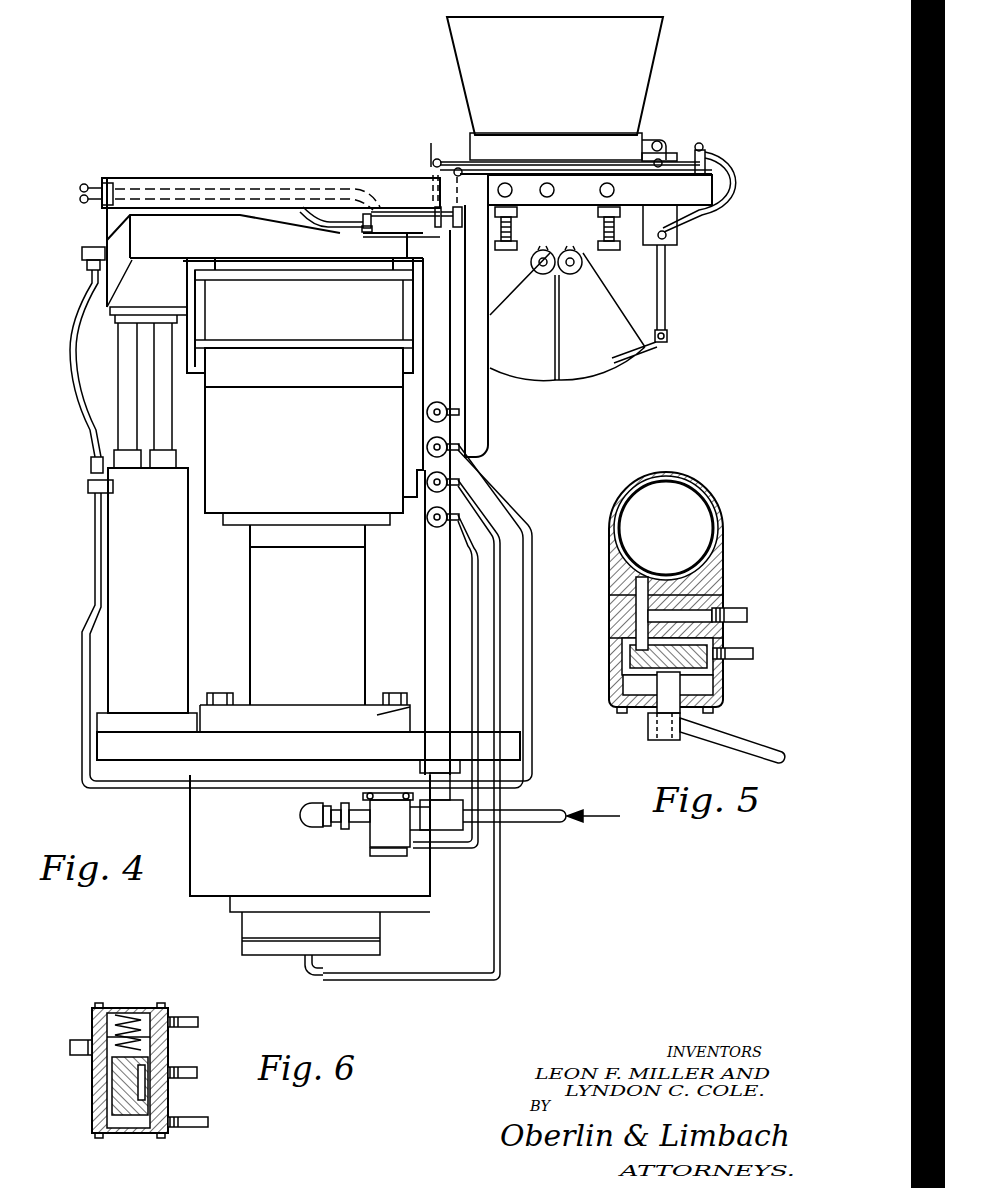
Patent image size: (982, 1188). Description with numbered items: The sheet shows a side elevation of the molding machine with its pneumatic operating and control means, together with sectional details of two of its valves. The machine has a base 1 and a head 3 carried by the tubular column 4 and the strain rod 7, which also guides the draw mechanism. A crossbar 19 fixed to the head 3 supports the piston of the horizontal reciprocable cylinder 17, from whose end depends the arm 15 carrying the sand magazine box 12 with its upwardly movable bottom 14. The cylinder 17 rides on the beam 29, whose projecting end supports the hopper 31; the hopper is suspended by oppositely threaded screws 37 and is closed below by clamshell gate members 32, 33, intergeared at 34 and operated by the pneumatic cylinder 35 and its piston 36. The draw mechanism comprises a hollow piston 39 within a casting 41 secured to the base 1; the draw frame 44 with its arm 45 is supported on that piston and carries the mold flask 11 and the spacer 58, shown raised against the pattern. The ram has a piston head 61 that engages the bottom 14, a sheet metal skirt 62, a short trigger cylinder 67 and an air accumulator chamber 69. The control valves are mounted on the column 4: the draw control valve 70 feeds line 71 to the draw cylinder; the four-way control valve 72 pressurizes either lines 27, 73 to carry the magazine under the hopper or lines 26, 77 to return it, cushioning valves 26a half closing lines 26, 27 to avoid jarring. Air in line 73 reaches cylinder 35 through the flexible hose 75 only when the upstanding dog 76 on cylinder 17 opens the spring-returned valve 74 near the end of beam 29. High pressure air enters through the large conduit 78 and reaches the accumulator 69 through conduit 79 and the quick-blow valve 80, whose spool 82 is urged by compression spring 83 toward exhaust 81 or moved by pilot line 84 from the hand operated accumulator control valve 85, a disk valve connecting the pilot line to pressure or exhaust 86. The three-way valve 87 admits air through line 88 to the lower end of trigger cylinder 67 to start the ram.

In FIG. 4, the base 1 is at (105, 745).
In FIG. 4, the head 3 is at (105, 223).
In FIG. 4, the tubular column 4 is at (437, 637).
In FIG. 5, the tubular column 4 is at (708, 500).
In FIG. 4, the strain rod 7 is at (145, 385).
In FIG. 4, the mold flask 11 is at (305, 377).
In FIG. 4, the sand magazine box 12 is at (304, 450).
In FIG. 4, the bottom 14 is at (232, 520).
In FIG. 4, the arm 15 is at (480, 385).
In FIG. 4, the cylinder 17 is at (375, 188).
In FIG. 4, the crossbar 19 is at (110, 178).
In FIG. 4, the line 26 is at (80, 199).
In FIG. 4, the cushioning valve 26a is at (364, 228).
In FIG. 4, the line 27 is at (84, 183).
In FIG. 4, the beam 29 is at (700, 195).
In FIG. 4, the hopper 31 is at (638, 65).
In FIG. 4, the gate member 32 is at (543, 366).
In FIG. 4, the gate member 33 is at (602, 363).
In FIG. 4, the intergearing 34 is at (556, 252).
In FIG. 4, the pneumatic cylinder 35 is at (668, 236).
In FIG. 4, the piston 36 is at (666, 290).
In FIG. 4, the screw 37 is at (513, 228).
In FIG. 4, the hollow piston 39 is at (122, 360).
In FIG. 4, the casting 41 is at (130, 540).
In FIG. 4, the draw frame 44 is at (110, 272).
In FIG. 4, the arm 45 is at (225, 232).
In FIG. 4, the spacer 58 is at (304, 367).
In FIG. 4, the piston head 61 is at (355, 532).
In FIG. 4, the sheet metal skirt 62 is at (348, 634).
In FIG. 4, the trigger cylinder 67 is at (365, 922).
In FIG. 4, the air accumulator chamber 69 is at (205, 868).
In FIG. 4, the draw control valve 70 is at (460, 447).
In FIG. 4, the line 71 is at (68, 342).
In FIG. 4, the four-way control valve 72 is at (460, 412).
In FIG. 4, the line 73 is at (510, 172).
In FIG. 4, the three-way spring-returned valve 74 is at (697, 152).
In FIG. 4, the flexible hose 75 is at (732, 174).
In FIG. 4, the upstanding dog 76 is at (428, 162).
In FIG. 4, the line 77 is at (578, 170).
In FIG. 4, the large conduit 78 is at (538, 823).
In FIG. 6, the large conduit 78 is at (185, 1072).
In FIG. 4, the conduit 79 is at (307, 826).
In FIG. 6, the conduit 79 is at (78, 1052).
In FIG. 4, the quick-blow valve 80 is at (380, 825).
In FIG. 6, the quick-blow valve 80 is at (115, 1010).
In FIG. 6, the exhaust 81 is at (195, 1017).
In FIG. 6, the spool 82 is at (95, 1100).
In FIG. 6, the compression spring 83 is at (138, 1012).
In FIG. 4, the pilot line 84 is at (450, 852).
In FIG. 5, the pilot line 84 is at (735, 612).
In FIG. 6, the pilot line 84 is at (192, 1128).
In FIG. 4, the accumulator control valve 85 is at (460, 517).
In FIG. 5, the accumulator control valve 85 is at (748, 748).
In FIG. 5, the exhaust 86 is at (755, 654).
In FIG. 4, the three-way valve 87 is at (460, 482).
In FIG. 4, the line 88 is at (502, 923).